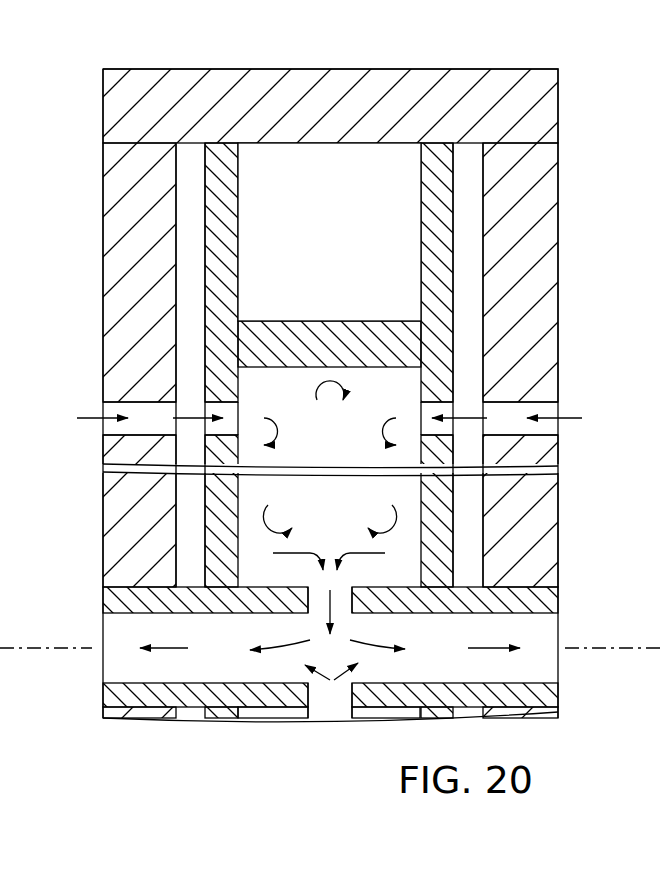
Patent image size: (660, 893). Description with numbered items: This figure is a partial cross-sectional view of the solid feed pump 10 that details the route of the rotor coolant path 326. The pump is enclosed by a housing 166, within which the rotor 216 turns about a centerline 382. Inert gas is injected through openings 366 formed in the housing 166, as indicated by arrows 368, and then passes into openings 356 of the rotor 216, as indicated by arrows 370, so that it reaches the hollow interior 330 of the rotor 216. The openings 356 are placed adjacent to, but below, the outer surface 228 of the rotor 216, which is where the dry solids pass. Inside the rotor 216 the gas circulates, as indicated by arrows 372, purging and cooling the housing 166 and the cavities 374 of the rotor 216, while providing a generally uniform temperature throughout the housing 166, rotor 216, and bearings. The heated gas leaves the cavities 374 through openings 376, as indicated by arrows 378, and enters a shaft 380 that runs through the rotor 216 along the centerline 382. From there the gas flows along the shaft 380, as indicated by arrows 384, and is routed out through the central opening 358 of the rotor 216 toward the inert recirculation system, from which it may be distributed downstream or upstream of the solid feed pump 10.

The solid feed pump 10 is at (528, 50).
The housing 166 is at (558, 150).
The rotor 216 is at (458, 260).
The outer surface 228 is at (330, 320).
The rotor coolant path 326 is at (405, 518).
The hollow interior 330 is at (262, 543).
The openings 356 is at (233, 400).
The central opening 358 is at (103, 683).
The openings 366 is at (130, 432).
The arrows 368 is at (100, 417).
The arrows 370 is at (190, 415).
The arrows 372 is at (268, 506).
The cavities 374 is at (397, 385).
The openings 376 is at (340, 605).
The arrows 378 is at (326, 592).
The shaft 380 is at (540, 582).
The centerline 382 is at (65, 646).
The arrows 384 is at (170, 648).